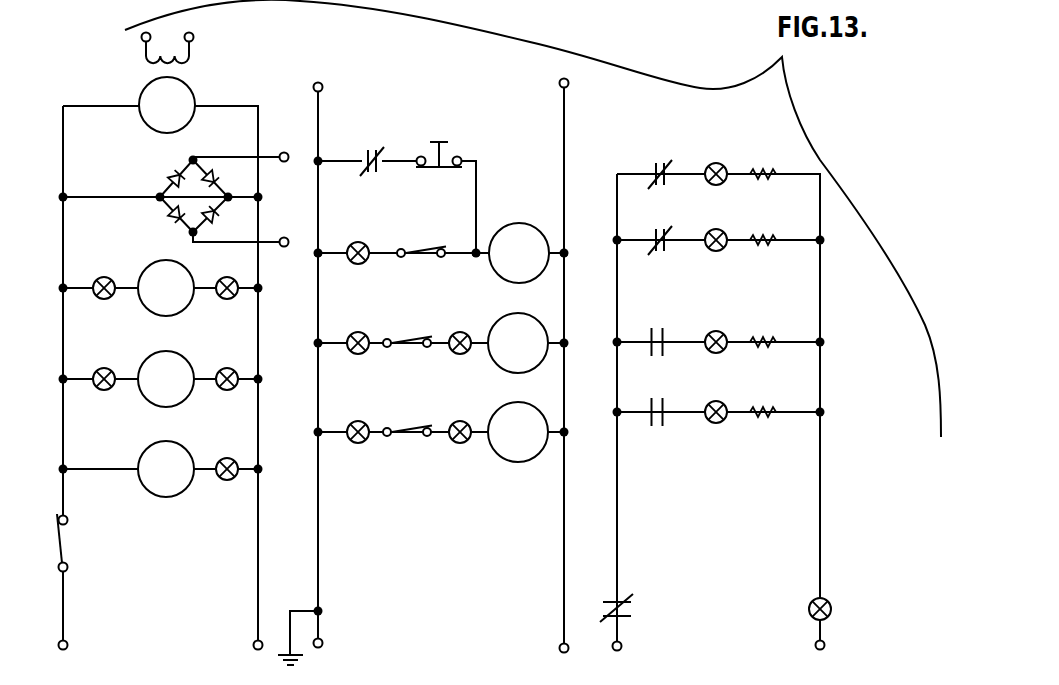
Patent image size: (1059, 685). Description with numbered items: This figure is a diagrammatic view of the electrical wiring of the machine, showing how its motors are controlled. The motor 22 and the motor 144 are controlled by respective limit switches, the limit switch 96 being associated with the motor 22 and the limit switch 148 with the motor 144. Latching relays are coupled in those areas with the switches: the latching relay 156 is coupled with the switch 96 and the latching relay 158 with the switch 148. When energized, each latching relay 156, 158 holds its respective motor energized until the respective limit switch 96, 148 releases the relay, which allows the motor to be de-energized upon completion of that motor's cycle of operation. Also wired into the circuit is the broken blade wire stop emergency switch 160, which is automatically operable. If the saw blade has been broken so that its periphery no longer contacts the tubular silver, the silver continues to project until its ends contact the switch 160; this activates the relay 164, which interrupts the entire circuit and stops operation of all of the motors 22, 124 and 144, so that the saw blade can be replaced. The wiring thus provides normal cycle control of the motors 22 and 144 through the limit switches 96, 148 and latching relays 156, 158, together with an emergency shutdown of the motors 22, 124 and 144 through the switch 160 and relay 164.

The motor 144 is at (192, 280).
The motor 22 is at (191, 371).
The motor 124 is at (187, 489).
The broken blade wire stop emergency switch 160 is at (425, 247).
The relay 164 is at (519, 223).
The limit switch 96 is at (410, 337).
The latching relay 156 is at (525, 312).
The limit switch 148 is at (411, 426).
The latching relay 158 is at (527, 462).